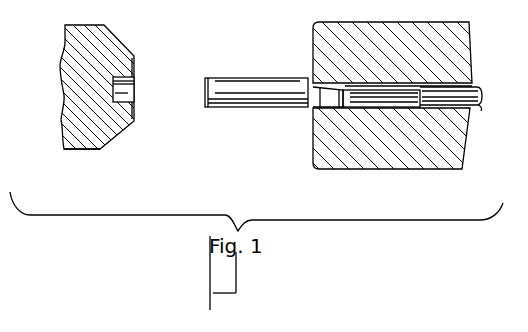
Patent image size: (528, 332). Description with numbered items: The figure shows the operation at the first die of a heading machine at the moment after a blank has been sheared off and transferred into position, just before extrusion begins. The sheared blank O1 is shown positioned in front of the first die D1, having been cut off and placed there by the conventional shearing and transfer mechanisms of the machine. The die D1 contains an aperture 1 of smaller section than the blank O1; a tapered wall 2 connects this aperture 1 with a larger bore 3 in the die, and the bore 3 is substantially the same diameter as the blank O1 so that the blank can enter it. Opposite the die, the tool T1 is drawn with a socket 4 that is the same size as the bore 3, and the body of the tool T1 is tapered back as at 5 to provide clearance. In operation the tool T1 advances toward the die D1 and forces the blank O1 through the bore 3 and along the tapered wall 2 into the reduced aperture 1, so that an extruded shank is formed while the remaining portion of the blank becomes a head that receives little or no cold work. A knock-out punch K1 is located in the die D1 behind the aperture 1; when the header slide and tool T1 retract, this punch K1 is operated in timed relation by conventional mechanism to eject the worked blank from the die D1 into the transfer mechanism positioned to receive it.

The aperture 1 is at (370, 106).
The tapered wall 2 is at (331, 104).
The bore 3 is at (316, 108).
The socket 4 is at (128, 93).
The tapered portion 5 is at (116, 142).
The tool T1 is at (70, 152).
The sheared blank O1 is at (250, 109).
The first die D1 is at (412, 171).
The knock-out punch K1 is at (474, 113).